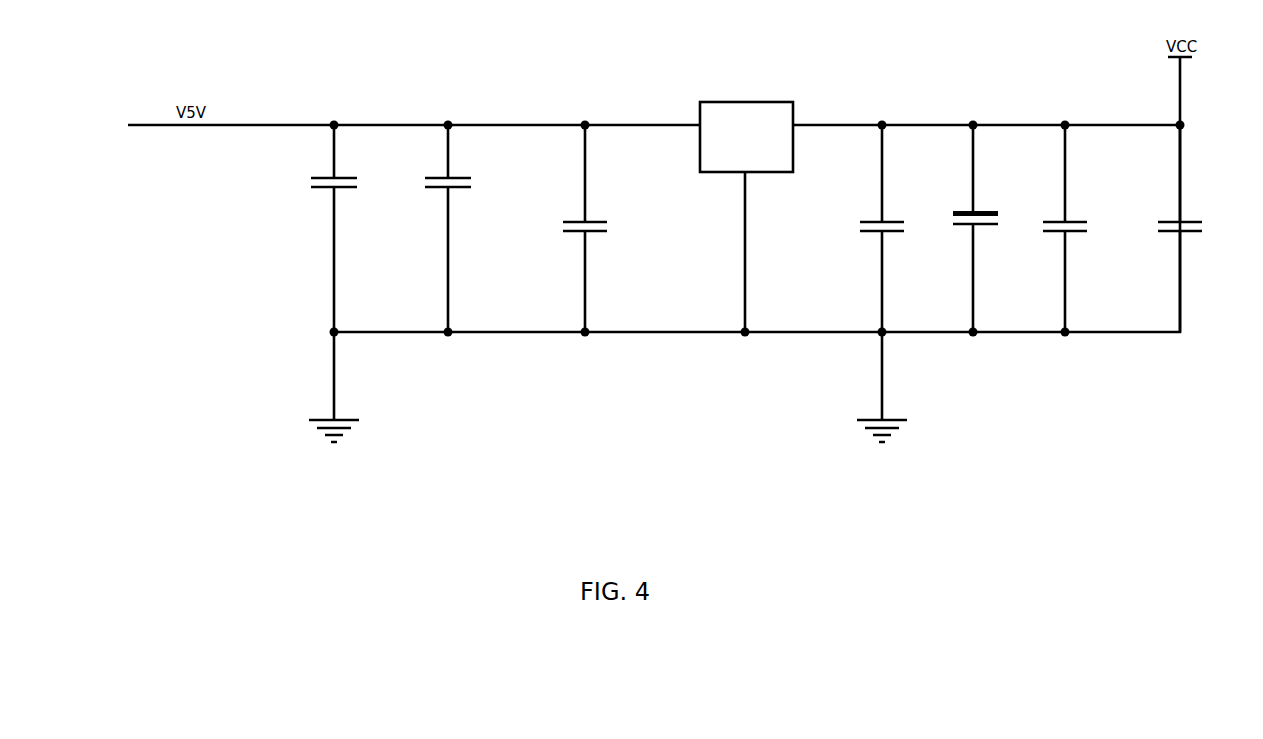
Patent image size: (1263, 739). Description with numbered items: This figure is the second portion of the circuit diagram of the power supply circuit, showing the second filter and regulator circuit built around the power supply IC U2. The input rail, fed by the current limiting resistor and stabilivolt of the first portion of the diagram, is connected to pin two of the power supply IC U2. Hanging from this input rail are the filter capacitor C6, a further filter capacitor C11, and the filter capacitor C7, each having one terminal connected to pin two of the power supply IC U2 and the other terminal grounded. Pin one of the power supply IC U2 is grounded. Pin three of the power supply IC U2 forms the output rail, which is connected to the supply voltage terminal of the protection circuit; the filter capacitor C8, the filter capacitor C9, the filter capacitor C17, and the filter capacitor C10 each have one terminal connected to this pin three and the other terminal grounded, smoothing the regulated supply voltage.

The filter capacitor C6 is at (326, 228).
The capacitor C11 (103) C11 is at (439, 228).
The filter capacitor C7 is at (572, 228).
The power supply IC U2 is at (745, 191).
The filter capacitor C8 is at (871, 228).
The filter capacitor C9 is at (990, 228).
The filter capacitor C17 is at (1091, 228).
The filter capacitor C10 is at (1204, 228).